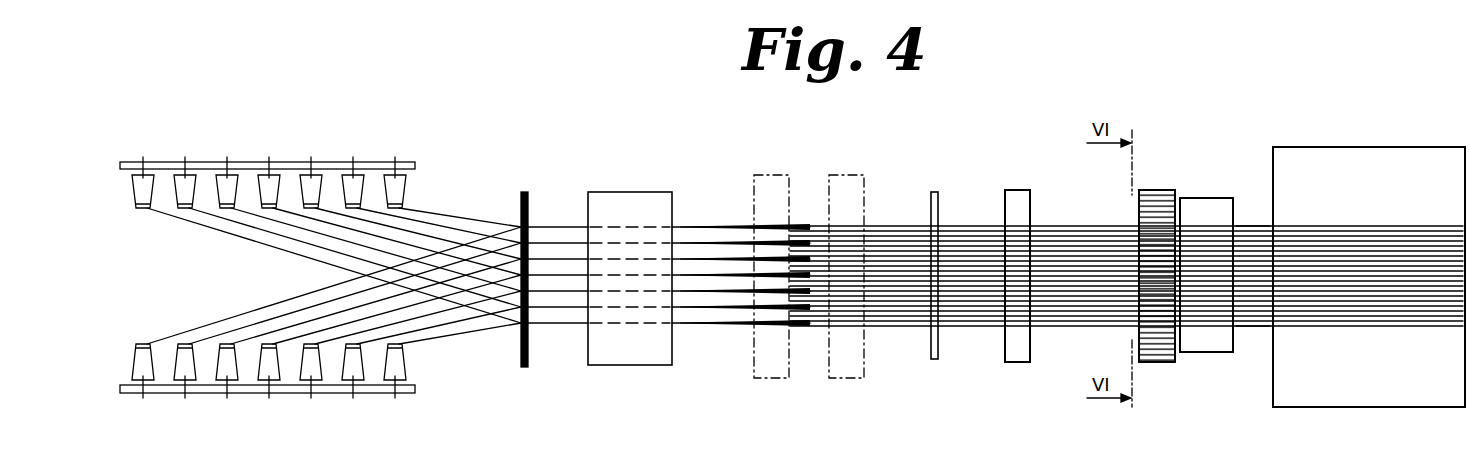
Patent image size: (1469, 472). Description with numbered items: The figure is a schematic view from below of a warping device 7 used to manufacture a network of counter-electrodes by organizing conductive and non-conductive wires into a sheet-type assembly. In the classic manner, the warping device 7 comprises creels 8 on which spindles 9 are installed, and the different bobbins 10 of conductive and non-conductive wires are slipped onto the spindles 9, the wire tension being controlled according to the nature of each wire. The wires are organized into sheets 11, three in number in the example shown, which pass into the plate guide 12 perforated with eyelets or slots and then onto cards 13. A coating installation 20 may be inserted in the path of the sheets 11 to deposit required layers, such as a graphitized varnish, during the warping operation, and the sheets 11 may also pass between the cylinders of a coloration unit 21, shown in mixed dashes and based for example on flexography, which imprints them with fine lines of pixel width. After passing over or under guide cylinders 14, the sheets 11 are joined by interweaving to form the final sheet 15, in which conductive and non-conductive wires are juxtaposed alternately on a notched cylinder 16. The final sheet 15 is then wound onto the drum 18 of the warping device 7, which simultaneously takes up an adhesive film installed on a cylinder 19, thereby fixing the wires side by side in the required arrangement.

The warping device 7 is at (610, 409).
The creels 8 is at (158, 162).
The spindles 9 is at (312, 162).
The bobbins 10 is at (386, 176).
The sheets 11 is at (468, 233).
The plate guide 12 is at (531, 192).
The cards 13 is at (938, 205).
The guide cylinders 14 is at (1030, 200).
The final sheet 15 is at (1254, 246).
The cylinder bearing notches 16 is at (1157, 194).
The drum 18 is at (1384, 160).
The cylinder 19 is at (1212, 205).
The coating installation 20 is at (644, 197).
The coloration unit 21 is at (770, 175).